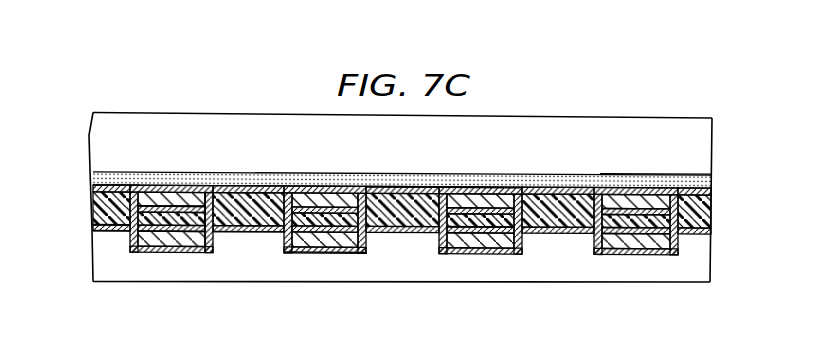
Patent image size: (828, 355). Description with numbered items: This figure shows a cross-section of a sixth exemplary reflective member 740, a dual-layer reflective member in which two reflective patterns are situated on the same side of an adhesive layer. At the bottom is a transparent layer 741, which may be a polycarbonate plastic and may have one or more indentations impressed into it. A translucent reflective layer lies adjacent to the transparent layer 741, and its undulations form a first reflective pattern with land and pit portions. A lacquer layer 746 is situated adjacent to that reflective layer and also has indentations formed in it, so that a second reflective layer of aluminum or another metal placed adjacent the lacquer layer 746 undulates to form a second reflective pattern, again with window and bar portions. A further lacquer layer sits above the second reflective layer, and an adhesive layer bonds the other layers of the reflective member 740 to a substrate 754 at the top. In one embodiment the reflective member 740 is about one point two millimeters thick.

The reflective member 740 is at (129, 73).
The transparent layer 741 is at (555, 283).
The lacquer layer 746 is at (712, 217).
The substrate 754 is at (596, 122).